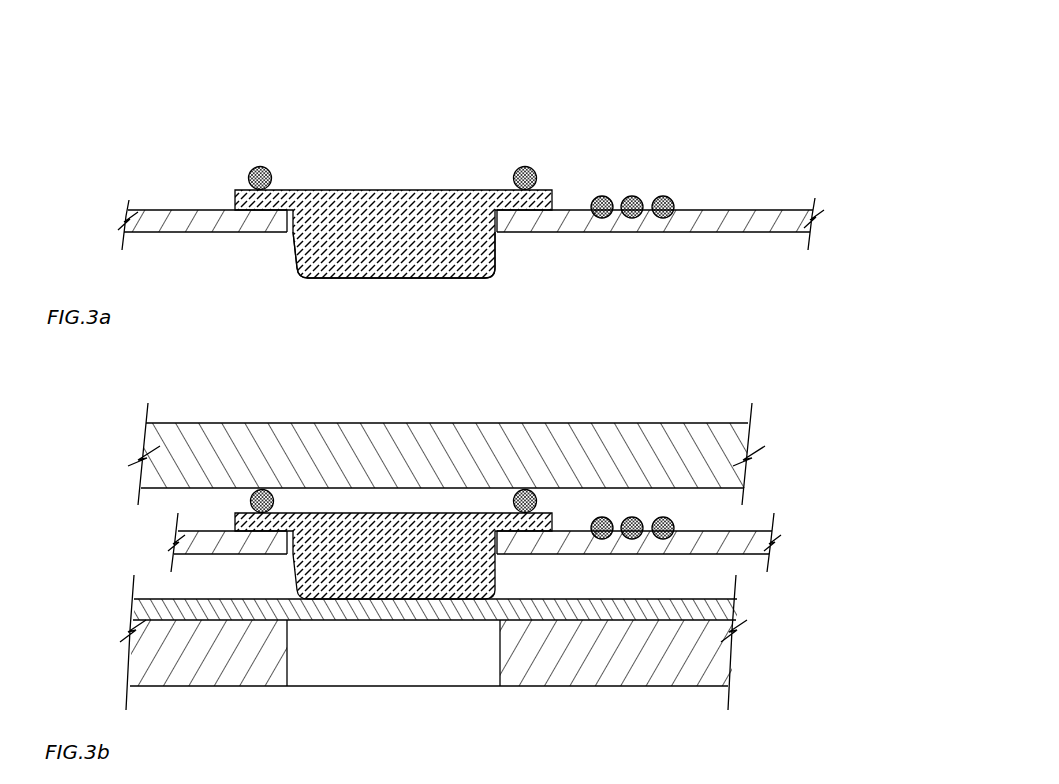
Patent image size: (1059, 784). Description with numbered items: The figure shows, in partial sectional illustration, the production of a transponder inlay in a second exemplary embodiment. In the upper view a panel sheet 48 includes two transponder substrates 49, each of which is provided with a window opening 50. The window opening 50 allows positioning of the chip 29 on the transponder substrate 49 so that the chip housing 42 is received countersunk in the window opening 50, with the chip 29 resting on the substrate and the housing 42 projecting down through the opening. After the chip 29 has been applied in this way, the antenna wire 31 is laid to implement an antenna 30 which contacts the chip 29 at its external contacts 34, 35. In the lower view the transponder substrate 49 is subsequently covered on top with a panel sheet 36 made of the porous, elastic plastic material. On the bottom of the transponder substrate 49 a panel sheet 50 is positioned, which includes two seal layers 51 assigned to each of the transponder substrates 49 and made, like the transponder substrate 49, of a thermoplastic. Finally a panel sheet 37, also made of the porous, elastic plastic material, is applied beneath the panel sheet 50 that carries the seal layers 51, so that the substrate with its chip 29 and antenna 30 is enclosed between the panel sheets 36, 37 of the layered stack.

In FIG. 3a, the chip 29 is at (375, 190).
In FIG. 3b, the chip 29 is at (393, 556).
In FIG. 3a, the antenna 30 is at (636, 190).
In FIG. 3b, the antenna 30 is at (617, 528).
In FIG. 3a, the antenna wire 31 is at (672, 197).
In FIG. 3b, the antenna wire 31 is at (663, 528).
In FIG. 3a, the external contact 34 is at (246, 182).
In FIG. 3b, the external contact 34 is at (262, 501).
In FIG. 3a, the external contact 35 is at (542, 186).
In FIG. 3b, the external contact 35 is at (525, 501).
In FIG. 3b, the panel sheet 36 is at (690, 422).
In FIG. 3b, the panel sheet 37 is at (662, 679).
In FIG. 3a, the chip housing 42 is at (358, 258).
In FIG. 3a, the panel sheet 48 is at (800, 117).
In FIG. 3a, the transponder substrate 49 is at (792, 208).
In FIG. 3b, the transponder substrate 49 is at (474, 542).
In FIG. 3a, the window opening / panel sheet 50 is at (505, 250).
In FIG. 3b, the window opening / panel sheet 50 is at (738, 607).
In FIG. 3b, the seal layer 51 is at (593, 608).